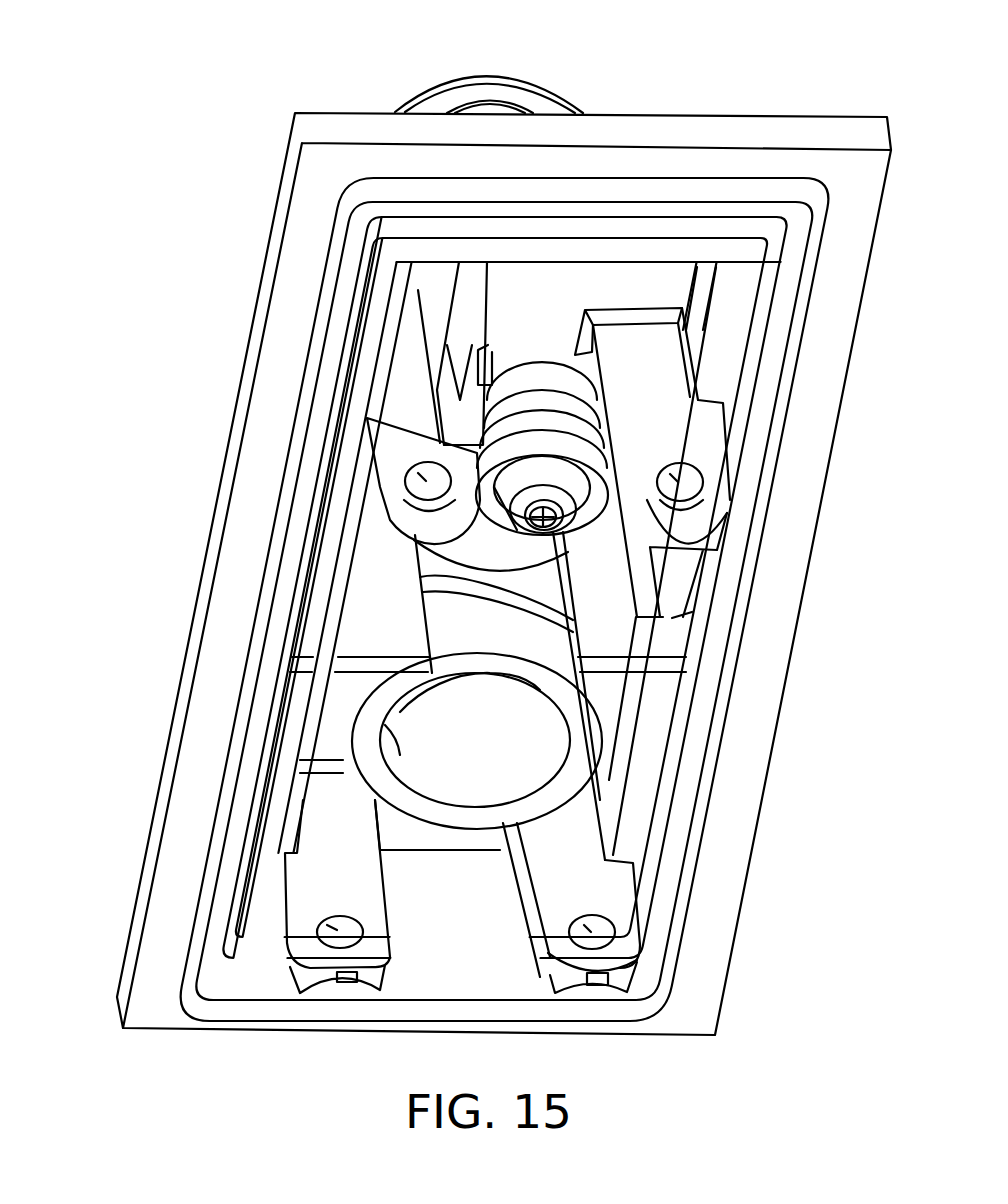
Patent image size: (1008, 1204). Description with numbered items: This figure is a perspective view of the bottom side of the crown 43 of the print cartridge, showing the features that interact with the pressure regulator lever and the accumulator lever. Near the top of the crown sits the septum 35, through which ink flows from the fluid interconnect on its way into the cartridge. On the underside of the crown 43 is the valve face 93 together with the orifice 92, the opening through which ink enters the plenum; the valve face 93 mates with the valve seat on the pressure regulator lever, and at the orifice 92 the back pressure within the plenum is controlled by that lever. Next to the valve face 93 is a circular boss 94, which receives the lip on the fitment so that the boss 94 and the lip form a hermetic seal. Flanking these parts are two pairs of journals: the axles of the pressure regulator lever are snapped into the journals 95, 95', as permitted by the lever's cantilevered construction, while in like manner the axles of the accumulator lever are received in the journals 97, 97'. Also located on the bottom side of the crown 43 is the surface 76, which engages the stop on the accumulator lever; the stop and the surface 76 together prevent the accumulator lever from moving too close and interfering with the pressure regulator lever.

The septum 35 is at (467, 80).
The crown 43 is at (208, 214).
The surface 76 is at (465, 370).
The orifice 92 is at (535, 540).
The valve face 93 is at (523, 500).
The circular boss 94 is at (400, 750).
The journal 95 is at (742, 463).
The journal 95' is at (663, 908).
The journal 97 is at (304, 481).
The journal 97' is at (216, 896).